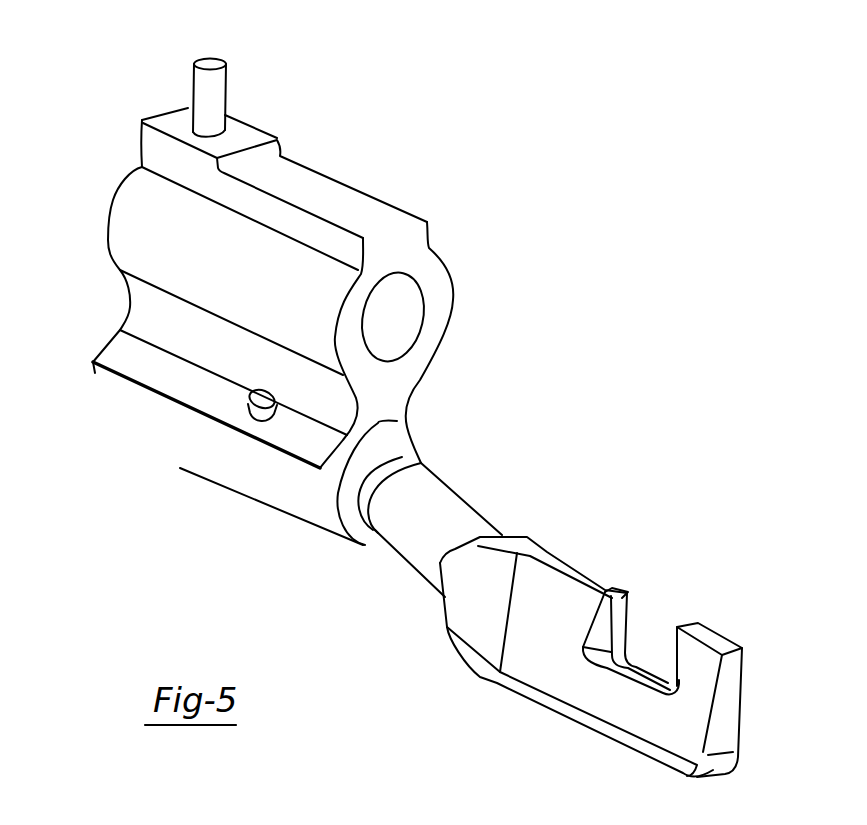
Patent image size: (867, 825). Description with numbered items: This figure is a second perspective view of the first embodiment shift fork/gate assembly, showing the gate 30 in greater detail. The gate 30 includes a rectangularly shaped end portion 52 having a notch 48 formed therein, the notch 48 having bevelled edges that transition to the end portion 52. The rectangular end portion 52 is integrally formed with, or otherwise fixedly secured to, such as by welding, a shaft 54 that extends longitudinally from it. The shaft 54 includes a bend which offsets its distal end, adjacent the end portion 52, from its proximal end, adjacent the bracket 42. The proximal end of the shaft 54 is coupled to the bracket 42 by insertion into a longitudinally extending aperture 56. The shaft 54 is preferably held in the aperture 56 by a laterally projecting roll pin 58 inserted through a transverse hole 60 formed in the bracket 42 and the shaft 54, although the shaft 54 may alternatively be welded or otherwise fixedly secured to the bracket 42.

The bracket 42 is at (178, 210).
The roll pin 58 is at (250, 395).
The transverse hole 60 is at (277, 417).
The longitudinal extending aperture 56 is at (392, 423).
The shaft 54 is at (440, 510).
The end portion 52 is at (565, 595).
The notch 48 is at (638, 626).
The gate 30 is at (705, 685).